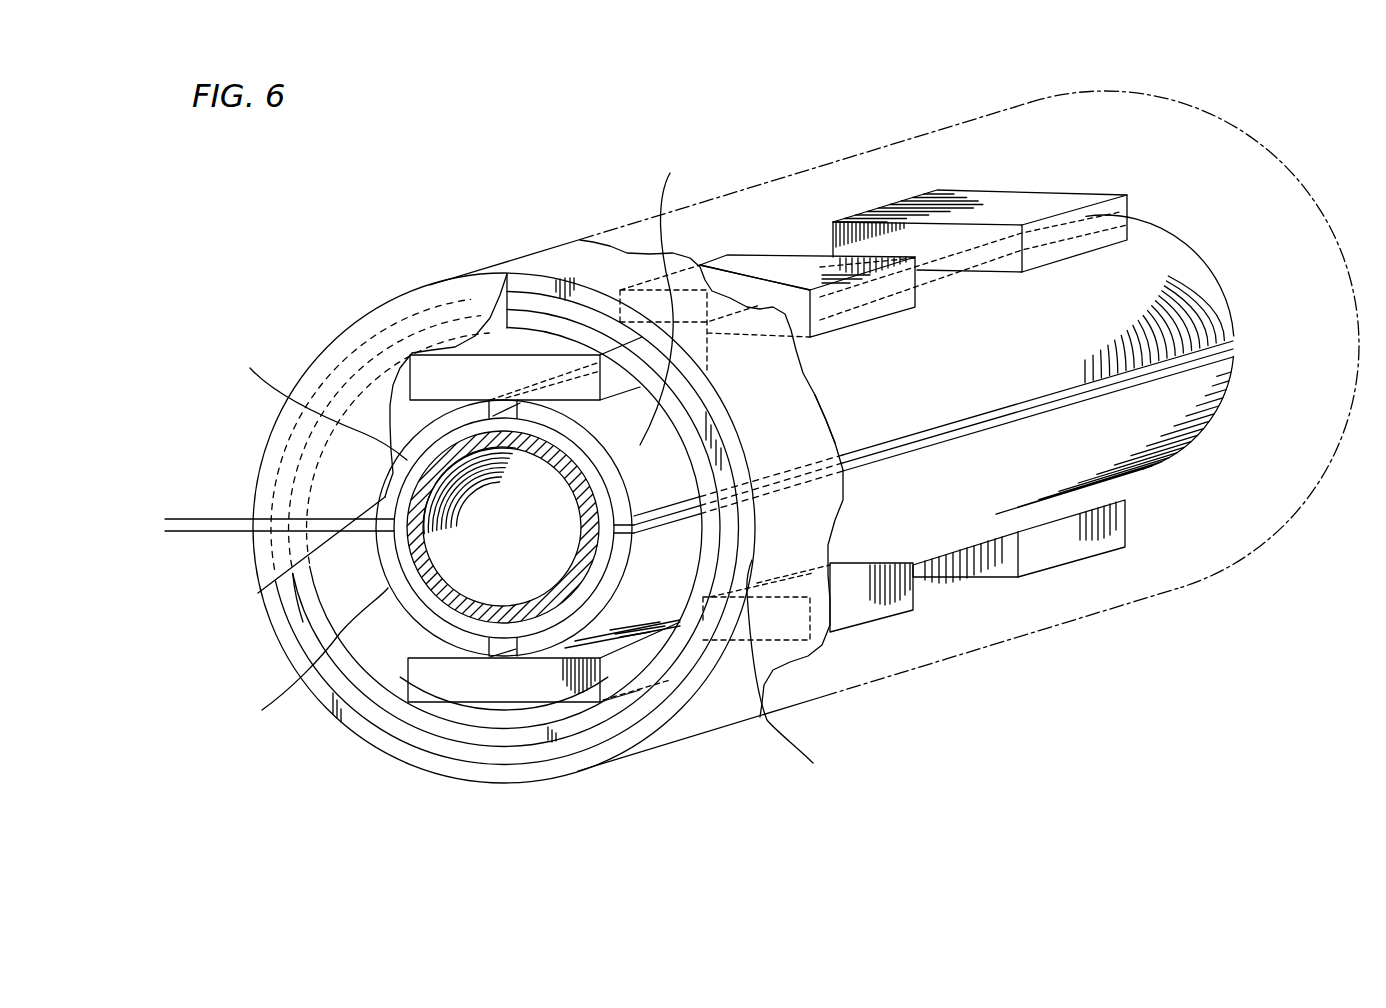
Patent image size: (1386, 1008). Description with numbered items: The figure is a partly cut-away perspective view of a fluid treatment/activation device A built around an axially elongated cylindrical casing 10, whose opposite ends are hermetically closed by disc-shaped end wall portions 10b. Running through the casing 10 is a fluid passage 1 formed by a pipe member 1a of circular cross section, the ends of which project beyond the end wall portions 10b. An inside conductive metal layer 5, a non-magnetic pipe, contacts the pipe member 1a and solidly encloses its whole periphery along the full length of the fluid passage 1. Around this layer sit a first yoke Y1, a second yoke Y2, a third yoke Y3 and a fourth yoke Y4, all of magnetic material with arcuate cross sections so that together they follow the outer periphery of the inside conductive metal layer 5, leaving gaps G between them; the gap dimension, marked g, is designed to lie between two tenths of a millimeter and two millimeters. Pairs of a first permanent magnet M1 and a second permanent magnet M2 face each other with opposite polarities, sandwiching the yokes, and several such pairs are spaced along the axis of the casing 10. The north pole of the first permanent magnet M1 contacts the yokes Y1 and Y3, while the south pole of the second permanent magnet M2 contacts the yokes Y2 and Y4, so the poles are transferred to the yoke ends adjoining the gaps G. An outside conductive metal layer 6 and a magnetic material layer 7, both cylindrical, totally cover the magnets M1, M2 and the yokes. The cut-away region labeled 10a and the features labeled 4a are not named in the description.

The fluid passage 1 is at (483, 573).
The pipe member 1a is at (545, 464).
The slit 4a is at (632, 551).
The inside conductive metal layer 5 is at (585, 592).
The outside conductive metal layer 6 is at (469, 326).
The magnetic material layer 7 is at (303, 622).
The casing 10 is at (569, 258).
The housing cut-away portion 10a is at (832, 407).
The end wall portions 10b is at (1257, 138).
The fluid treatment/activation device A is at (724, 755).
The gap G is at (495, 415).
The gap width g is at (182, 541).
The first permanent magnet M1 is at (460, 390).
The second permanent magnet M2 is at (427, 672).
The first yoke Y1 is at (316, 402).
The second yoke Y2 is at (310, 658).
The third yoke Y3 is at (664, 297).
The fourth yoke Y4 is at (792, 671).